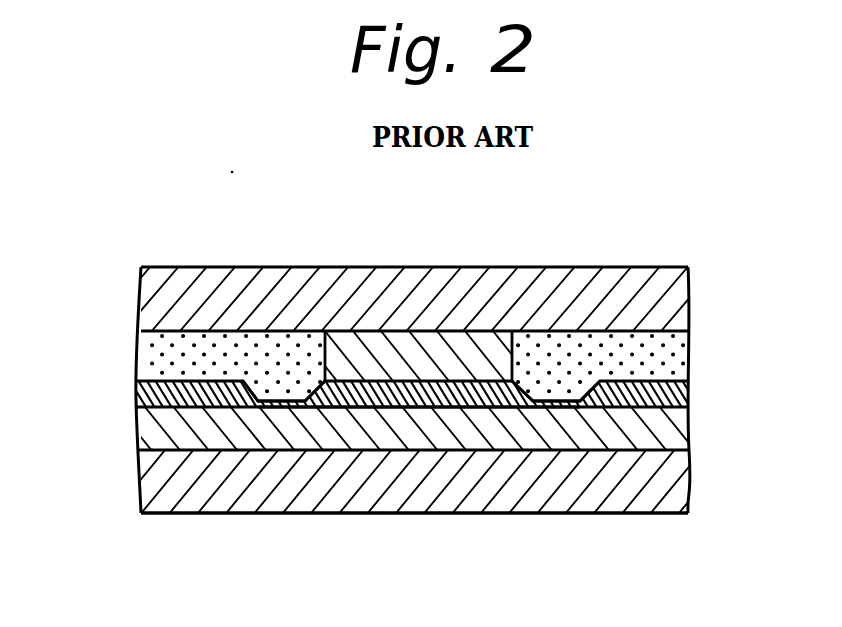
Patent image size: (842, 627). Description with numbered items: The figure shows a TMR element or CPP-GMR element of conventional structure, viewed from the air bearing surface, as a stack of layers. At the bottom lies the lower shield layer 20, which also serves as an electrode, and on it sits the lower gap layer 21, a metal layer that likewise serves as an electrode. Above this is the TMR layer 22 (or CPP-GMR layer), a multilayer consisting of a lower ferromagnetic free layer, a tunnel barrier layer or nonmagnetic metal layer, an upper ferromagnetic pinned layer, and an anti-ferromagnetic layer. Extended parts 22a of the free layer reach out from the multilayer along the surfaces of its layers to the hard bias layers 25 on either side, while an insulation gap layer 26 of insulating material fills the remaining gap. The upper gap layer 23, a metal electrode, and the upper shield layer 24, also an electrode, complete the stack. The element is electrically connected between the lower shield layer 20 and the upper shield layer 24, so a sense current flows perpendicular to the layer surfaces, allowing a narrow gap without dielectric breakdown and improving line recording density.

The lower shield layer 20 is at (689, 487).
The lower gap layer 21 is at (689, 433).
The TMR layer 22 is at (447, 407).
The extended parts of the lower ferromagnetic thin-film layer 22a is at (277, 407).
The upper gap layer 23 is at (445, 343).
The upper shield layer 24 is at (690, 291).
The hard bias layers 25 is at (137, 391).
The insulation gap layer 26 is at (141, 345).